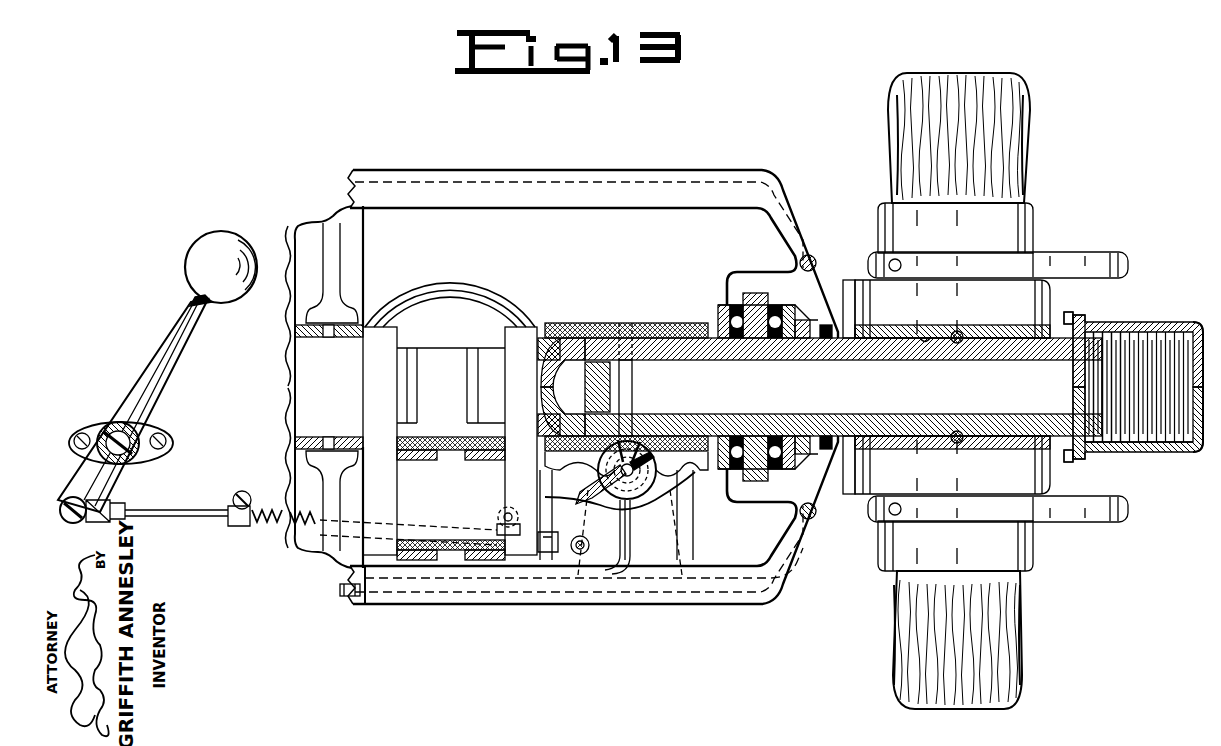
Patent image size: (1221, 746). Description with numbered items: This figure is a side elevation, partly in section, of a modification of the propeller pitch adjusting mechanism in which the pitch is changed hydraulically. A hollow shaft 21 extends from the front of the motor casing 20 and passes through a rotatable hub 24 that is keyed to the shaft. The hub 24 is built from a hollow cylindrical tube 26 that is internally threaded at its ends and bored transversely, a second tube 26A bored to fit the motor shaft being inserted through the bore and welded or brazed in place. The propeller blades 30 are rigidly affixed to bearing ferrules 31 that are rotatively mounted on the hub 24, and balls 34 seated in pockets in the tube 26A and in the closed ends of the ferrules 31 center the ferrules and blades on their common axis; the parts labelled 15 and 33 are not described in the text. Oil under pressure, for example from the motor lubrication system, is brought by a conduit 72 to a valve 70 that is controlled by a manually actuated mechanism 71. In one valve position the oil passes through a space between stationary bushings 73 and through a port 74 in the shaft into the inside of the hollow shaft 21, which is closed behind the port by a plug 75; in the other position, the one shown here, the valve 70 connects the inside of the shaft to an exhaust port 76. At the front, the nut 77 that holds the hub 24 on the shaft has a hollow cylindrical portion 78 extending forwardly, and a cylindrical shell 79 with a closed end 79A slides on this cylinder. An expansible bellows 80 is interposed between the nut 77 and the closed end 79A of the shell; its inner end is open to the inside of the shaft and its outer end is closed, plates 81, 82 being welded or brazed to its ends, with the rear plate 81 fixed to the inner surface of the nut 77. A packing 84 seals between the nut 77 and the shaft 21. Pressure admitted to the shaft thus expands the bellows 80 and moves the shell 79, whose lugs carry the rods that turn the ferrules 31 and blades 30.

The struts 15 is at (708, 473).
The motor casing 20 is at (733, 170).
The hollow shaft 21 is at (855, 414).
The rotatable hub 24 is at (952, 387).
The hollow cylindrical tube 26 is at (850, 282).
The tube 26A is at (930, 342).
The propeller blades 30 is at (1028, 116).
The bearing ferrules 31 is at (1036, 218).
The flange disc 33 is at (1104, 252).
The balls 34 is at (957, 430).
The valve 70 is at (636, 500).
The manually actuated mechanism 71 is at (162, 403).
The conduit 72 is at (632, 563).
The stationary bushings 73 is at (650, 325).
The port 74 is at (628, 410).
The plug 75 is at (585, 386).
The exhaust port 76 is at (530, 496).
The nut 77 is at (1072, 310).
The hollow cylindrical portion 78 is at (1096, 458).
The cylindrical shell 79 is at (1132, 458).
The closed end 79A is at (1204, 460).
The expansible bellows 80 is at (1186, 460).
The rear plate 81 is at (1100, 322).
The plate 82 is at (1188, 330).
The packing 84 is at (1084, 362).